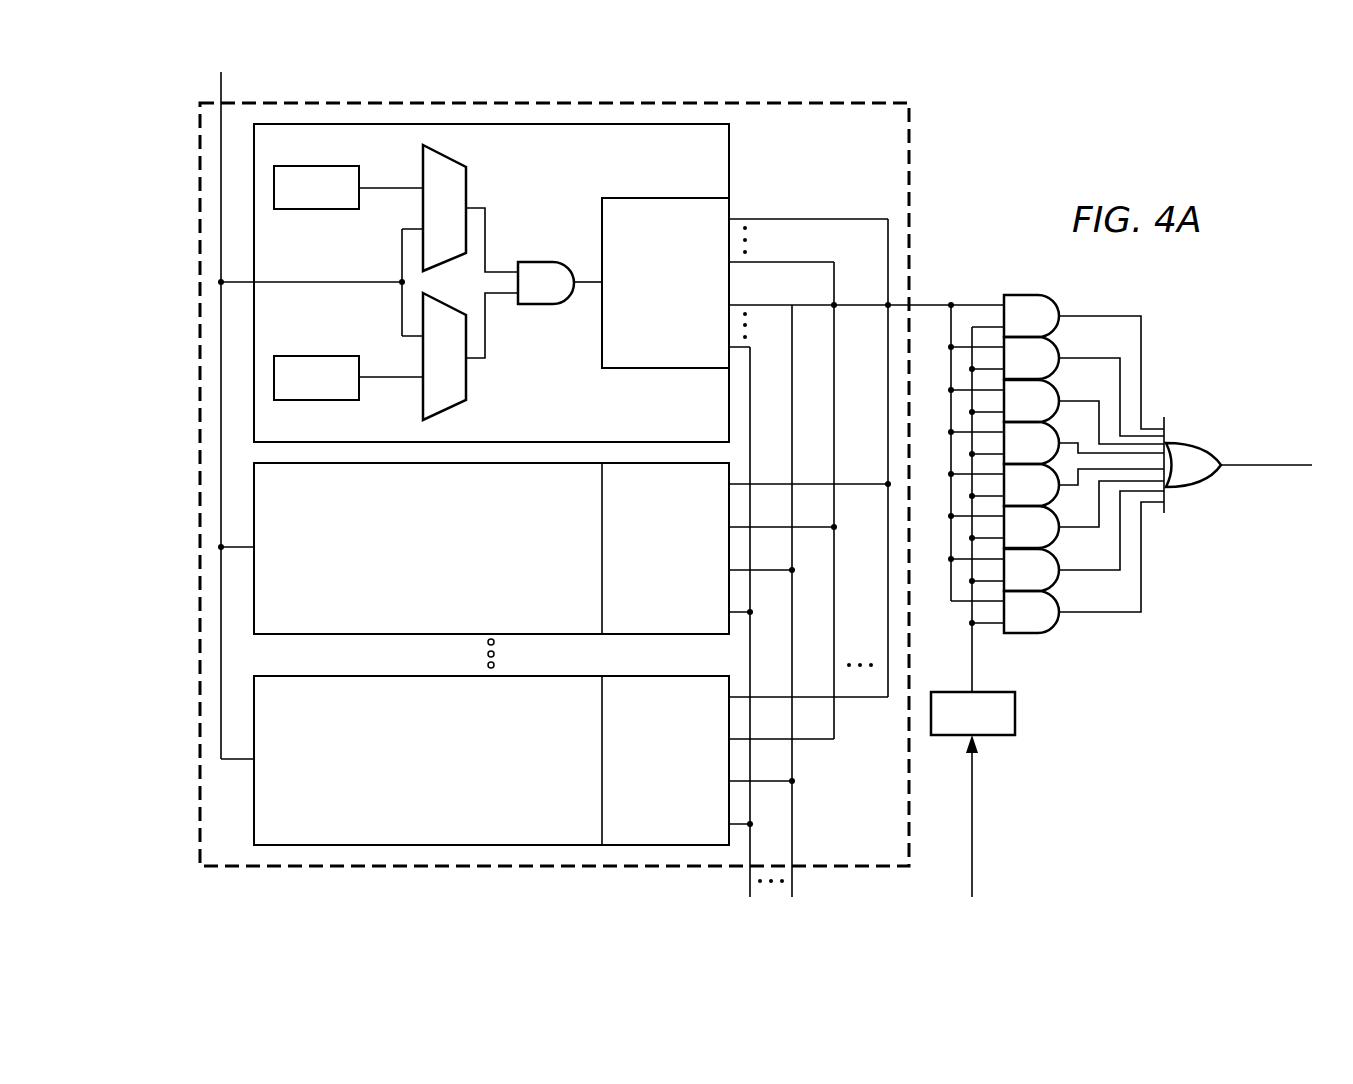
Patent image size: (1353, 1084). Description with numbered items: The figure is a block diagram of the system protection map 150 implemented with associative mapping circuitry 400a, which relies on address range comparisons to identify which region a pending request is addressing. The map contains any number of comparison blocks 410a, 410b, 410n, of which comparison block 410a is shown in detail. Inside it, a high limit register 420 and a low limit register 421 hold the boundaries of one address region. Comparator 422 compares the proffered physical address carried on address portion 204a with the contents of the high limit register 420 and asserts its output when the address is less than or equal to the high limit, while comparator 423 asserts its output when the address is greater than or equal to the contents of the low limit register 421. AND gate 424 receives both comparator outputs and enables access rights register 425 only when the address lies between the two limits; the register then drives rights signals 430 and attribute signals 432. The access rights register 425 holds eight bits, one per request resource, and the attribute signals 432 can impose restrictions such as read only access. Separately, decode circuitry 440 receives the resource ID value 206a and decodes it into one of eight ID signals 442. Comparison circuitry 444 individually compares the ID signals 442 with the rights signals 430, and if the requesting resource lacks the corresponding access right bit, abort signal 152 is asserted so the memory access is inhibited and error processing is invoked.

The system protection map 150 is at (158, 231).
The address portion 204a is at (221, 76).
The associative mapping circuitry 400a is at (909, 229).
The comparison block 410a is at (690, 421).
The comparison block 410b is at (322, 605).
The comparison block 410n is at (322, 815).
The high limit register 420 is at (313, 210).
The low limit register 421 is at (315, 356).
The comparator 422 is at (466, 183).
The comparator 423 is at (466, 383).
The AND gate 424 is at (537, 262).
The access rights register 425 is at (665, 198).
The rights signals 430 is at (836, 704).
The attribute signals 432 is at (752, 905).
The decode circuitry 440 is at (1015, 713).
The ID signals 442 is at (972, 672).
The comparison circuitry 444 is at (1183, 442).
The abort signal 152 is at (1262, 467).
The resource ID value 206a is at (972, 836).